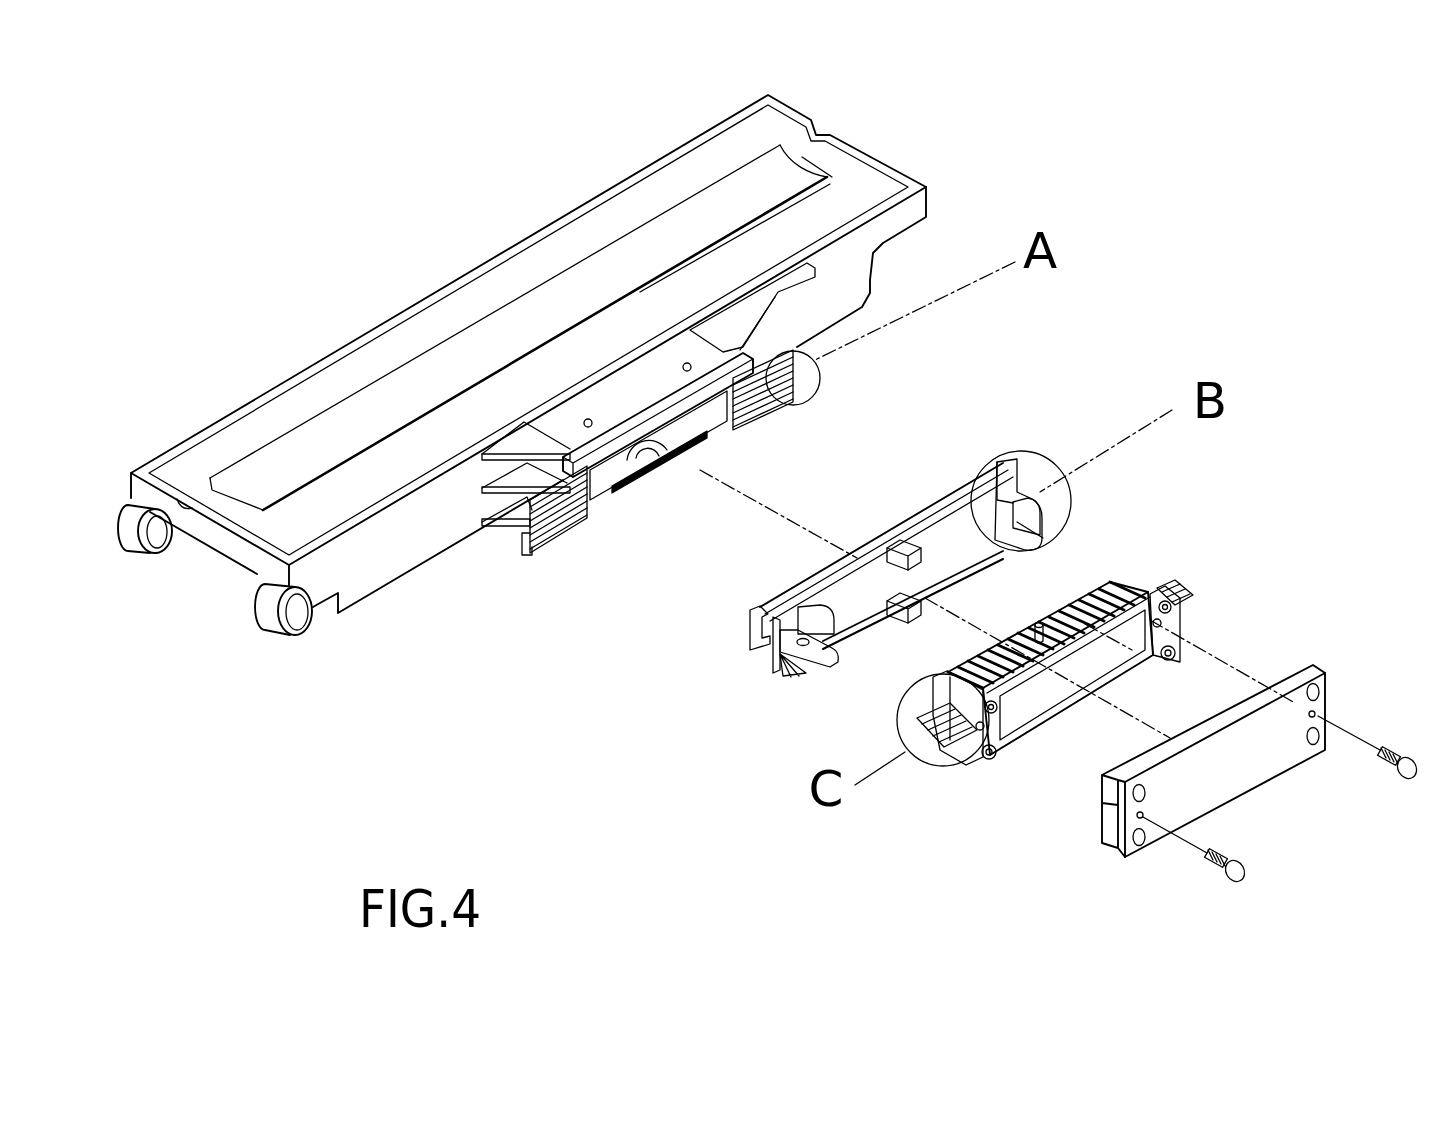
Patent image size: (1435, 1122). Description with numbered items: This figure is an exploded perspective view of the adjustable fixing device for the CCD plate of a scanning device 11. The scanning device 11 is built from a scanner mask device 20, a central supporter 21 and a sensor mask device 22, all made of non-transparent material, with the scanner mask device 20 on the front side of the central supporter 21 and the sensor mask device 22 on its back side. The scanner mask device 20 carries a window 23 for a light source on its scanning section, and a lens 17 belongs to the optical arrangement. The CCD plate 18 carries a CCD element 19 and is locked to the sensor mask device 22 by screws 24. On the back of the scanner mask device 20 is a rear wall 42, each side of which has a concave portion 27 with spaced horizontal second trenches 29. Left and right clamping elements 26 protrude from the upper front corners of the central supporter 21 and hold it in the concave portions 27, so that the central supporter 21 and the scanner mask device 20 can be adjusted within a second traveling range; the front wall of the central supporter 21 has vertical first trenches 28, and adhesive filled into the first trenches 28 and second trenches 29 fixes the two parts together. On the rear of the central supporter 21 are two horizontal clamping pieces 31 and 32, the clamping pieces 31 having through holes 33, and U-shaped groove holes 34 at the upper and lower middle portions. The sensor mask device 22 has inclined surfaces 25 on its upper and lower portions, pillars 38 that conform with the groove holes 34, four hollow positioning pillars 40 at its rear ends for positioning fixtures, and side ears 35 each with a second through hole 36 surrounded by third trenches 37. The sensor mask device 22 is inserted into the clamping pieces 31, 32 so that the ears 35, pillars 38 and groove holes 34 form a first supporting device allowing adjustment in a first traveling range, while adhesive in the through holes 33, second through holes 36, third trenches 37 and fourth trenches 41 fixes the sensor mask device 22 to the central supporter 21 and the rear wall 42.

The scanning device 11 is at (414, 290).
The lens 17 is at (655, 460).
The CCD plate 18 is at (1115, 849).
The CCD element 19 is at (1225, 712).
The scanner mask device 20 is at (887, 163).
The central supporter 21 is at (772, 650).
The sensor mask device 22 is at (923, 705).
The window 23 is at (550, 293).
The screw 24 is at (1395, 772).
The inclined surface 25 is at (1065, 630).
The clamping element 26 is at (753, 627).
The concave portion 27 is at (790, 347).
The first trench 28 is at (982, 537).
The second trench 29 is at (822, 394).
The clamping piece 31 is at (1050, 480).
The clamping piece 32 is at (1060, 522).
The through hole 33 is at (778, 652).
The U shape groove hole 34 is at (897, 530).
The ear 35 is at (1180, 607).
The second through hole 36 is at (948, 748).
The third trench 37 is at (1190, 588).
The pillar 38 is at (1040, 620).
The hollow positioning pillar 40 is at (1165, 598).
The fourth trench 41 is at (1078, 595).
The rear wall 42 is at (757, 422).